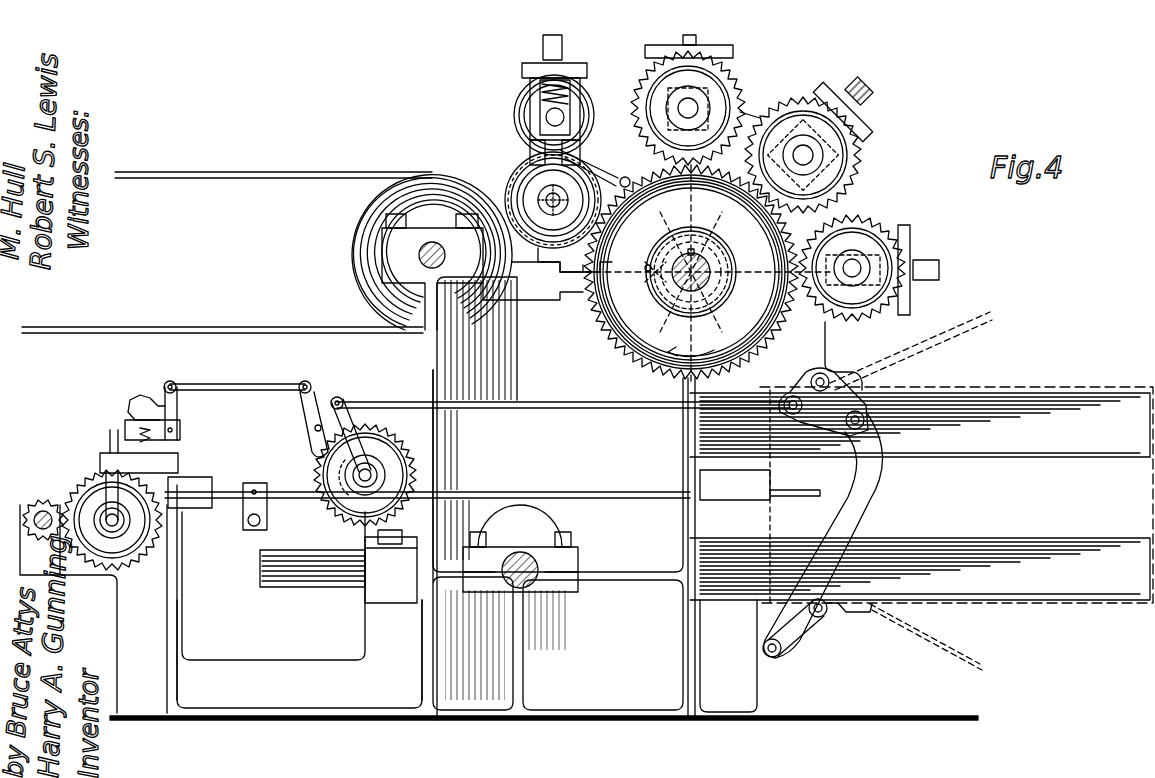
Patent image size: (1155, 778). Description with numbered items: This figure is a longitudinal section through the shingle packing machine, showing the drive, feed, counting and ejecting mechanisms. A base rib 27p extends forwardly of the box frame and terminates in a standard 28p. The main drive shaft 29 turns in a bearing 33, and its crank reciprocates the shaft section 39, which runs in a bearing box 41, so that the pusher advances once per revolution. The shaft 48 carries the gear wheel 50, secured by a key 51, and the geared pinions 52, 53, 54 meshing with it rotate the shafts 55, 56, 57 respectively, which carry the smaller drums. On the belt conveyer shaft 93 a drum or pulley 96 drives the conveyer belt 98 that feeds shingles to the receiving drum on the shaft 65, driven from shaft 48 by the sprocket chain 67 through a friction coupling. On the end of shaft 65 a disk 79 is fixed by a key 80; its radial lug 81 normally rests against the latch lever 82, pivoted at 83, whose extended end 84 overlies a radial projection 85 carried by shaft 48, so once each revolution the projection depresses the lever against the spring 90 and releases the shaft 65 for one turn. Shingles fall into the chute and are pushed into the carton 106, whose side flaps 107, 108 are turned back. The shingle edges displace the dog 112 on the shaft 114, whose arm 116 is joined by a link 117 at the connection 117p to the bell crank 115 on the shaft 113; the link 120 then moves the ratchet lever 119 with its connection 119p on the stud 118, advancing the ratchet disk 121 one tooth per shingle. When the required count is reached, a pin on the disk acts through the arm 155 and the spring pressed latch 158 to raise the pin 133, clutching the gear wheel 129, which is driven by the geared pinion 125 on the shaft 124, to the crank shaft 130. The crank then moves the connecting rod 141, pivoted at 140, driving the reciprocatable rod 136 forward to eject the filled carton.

The conveyer belt 98 is at (312, 164).
The drum or pulley 96 is at (368, 242).
The belt conveyer shaft 93 is at (418, 256).
The shaft 65 is at (528, 160).
The key 80 is at (578, 158).
The sprocket chain 67 is at (604, 180).
The disk 79 is at (512, 192).
The radial lug 81 is at (538, 268).
The spring 90 is at (578, 292).
The latch lever 82 is at (522, 288).
The gear wheel 50 is at (614, 333).
The shaft 48 is at (712, 252).
The key 51 is at (700, 236).
The extended end 84 is at (664, 214).
The pivot 83 is at (660, 258).
The radial projection 85 is at (678, 300).
The geared pinion 52 is at (700, 100).
The shaft 55 is at (758, 112).
The geared pinion 53 is at (868, 168).
The shaft 56 is at (868, 125).
The geared pinion 54 is at (868, 226).
The shaft 57 is at (940, 264).
The carton 106 is at (1045, 387).
The side flap 107 is at (992, 322).
The side flap 108 is at (990, 666).
The shaft 113 is at (830, 383).
The bell crank 115 is at (789, 398).
The oscillatable dog 112 is at (845, 421).
The link 117 is at (872, 480).
The connection point 117p is at (882, 441).
The arm 116 is at (790, 652).
The shaft 114 is at (830, 613).
The link 120 is at (603, 410).
The reciprocatable rod 136 is at (631, 491).
The pin 133 is at (176, 386).
The arm 155 is at (178, 413).
The spring pressed latch 158 is at (186, 426).
The gear wheel 129 is at (108, 450).
The ratchet lever 119p is at (326, 390).
The oscillatable ratchet lever 119 is at (348, 405).
The ratchet disk or wheel 121 is at (320, 480).
The stud 118 is at (352, 492).
The connecting rod 141 is at (210, 520).
The pivot 140 is at (258, 528).
The geared pinion 125 is at (82, 490).
The crank shaft 130 is at (118, 528).
The shaft 124 is at (40, 504).
The bearing 33 is at (512, 546).
The main drive shaft 29 is at (545, 560).
The bearing box 41 is at (376, 553).
The shaft section 39 is at (321, 590).
The standard 28p is at (195, 610).
The base rib 27p is at (299, 650).